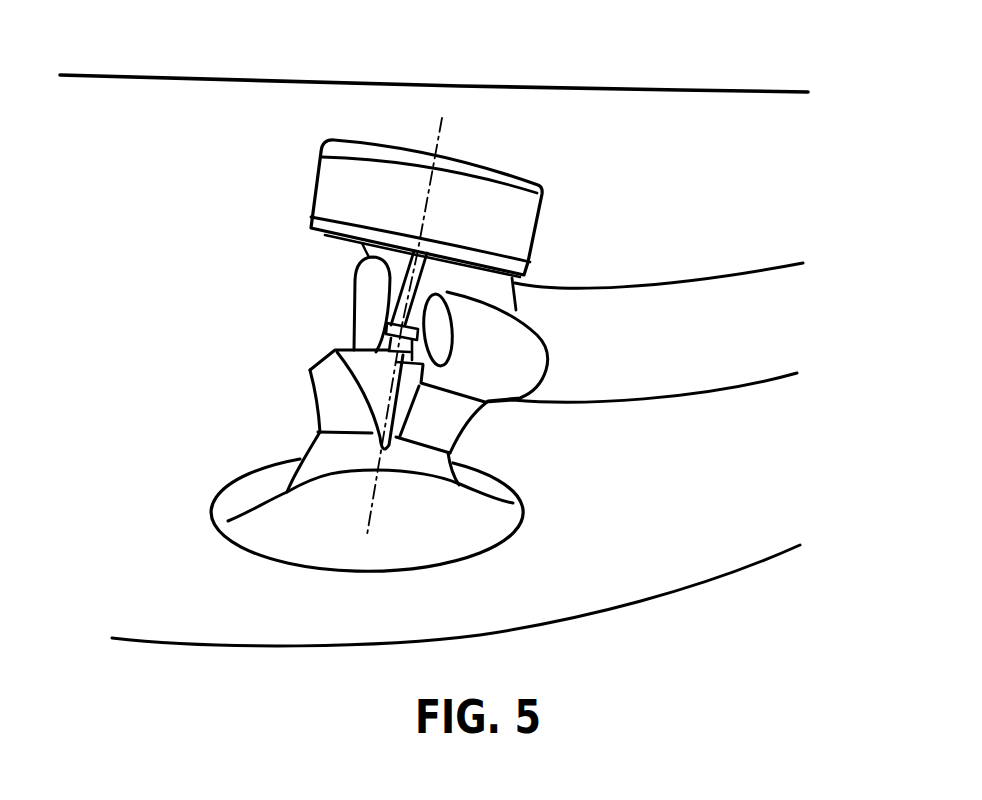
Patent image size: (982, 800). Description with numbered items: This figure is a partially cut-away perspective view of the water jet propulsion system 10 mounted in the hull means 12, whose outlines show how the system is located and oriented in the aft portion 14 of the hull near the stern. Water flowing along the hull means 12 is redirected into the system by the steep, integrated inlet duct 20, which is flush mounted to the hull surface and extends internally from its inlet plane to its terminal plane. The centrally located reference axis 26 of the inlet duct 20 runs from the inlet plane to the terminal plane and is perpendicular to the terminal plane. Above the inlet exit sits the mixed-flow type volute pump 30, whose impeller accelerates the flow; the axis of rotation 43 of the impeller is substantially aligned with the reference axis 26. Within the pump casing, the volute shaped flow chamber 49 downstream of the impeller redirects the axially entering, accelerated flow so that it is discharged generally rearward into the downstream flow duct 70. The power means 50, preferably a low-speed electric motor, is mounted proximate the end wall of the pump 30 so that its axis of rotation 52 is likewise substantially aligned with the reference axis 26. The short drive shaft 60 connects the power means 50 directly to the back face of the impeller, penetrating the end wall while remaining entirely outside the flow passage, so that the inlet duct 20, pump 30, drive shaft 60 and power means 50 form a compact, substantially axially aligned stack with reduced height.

The water jet propulsion system 10 is at (172, 329).
The hull means 12 is at (434, 51).
The aft portion 14 is at (277, 77).
The integrated inlet duct 20 is at (552, 503).
The reference axis 26 is at (372, 515).
The mixed-flow type volute pump 30 is at (488, 423).
The axis of rotation 43 is at (396, 377).
The volute shaped flow chamber 49 is at (365, 301).
The power means 50 is at (538, 217).
The axis of rotation 52 is at (440, 133).
The drive shaft 60 is at (398, 273).
The downstream flow duct 70 is at (732, 343).